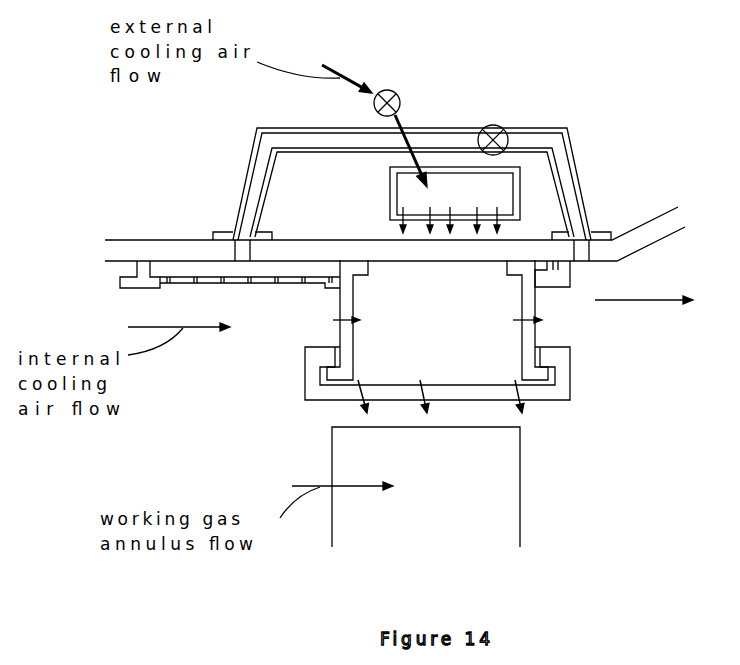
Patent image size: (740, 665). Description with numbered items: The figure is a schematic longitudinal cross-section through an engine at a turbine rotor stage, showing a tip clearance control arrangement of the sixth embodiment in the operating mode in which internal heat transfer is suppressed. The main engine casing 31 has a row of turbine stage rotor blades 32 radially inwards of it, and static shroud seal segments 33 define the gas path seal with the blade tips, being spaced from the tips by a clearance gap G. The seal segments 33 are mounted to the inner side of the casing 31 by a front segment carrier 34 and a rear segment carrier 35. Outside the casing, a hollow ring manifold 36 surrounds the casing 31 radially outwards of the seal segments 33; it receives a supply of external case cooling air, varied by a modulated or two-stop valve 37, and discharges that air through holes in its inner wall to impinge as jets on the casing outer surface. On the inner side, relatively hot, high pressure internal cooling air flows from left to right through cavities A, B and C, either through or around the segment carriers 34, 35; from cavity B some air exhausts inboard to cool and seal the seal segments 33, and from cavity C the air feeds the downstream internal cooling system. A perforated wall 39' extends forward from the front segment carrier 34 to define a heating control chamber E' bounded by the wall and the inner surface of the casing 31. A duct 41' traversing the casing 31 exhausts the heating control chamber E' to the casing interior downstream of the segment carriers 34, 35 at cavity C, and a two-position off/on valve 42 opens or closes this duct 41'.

The main engine casing 31 is at (137, 250).
The turbine stage rotor blades 32 is at (421, 528).
The static shroud seal segments 33 is at (535, 395).
The front segment carrier 34 is at (335, 353).
The rear segment carrier 35 is at (527, 347).
The hollow ring manifold 36 is at (517, 190).
The modulated or two-stop valve 37 is at (385, 90).
The wall 39' is at (301, 284).
The duct 41' is at (390, 184).
The 2-position off/on valve 42 is at (503, 128).
The heating control chamber E' is at (358, 225).
The clearance gap G is at (335, 412).
The cavity A is at (267, 335).
The cavity B is at (426, 337).
The cavity C is at (647, 338).